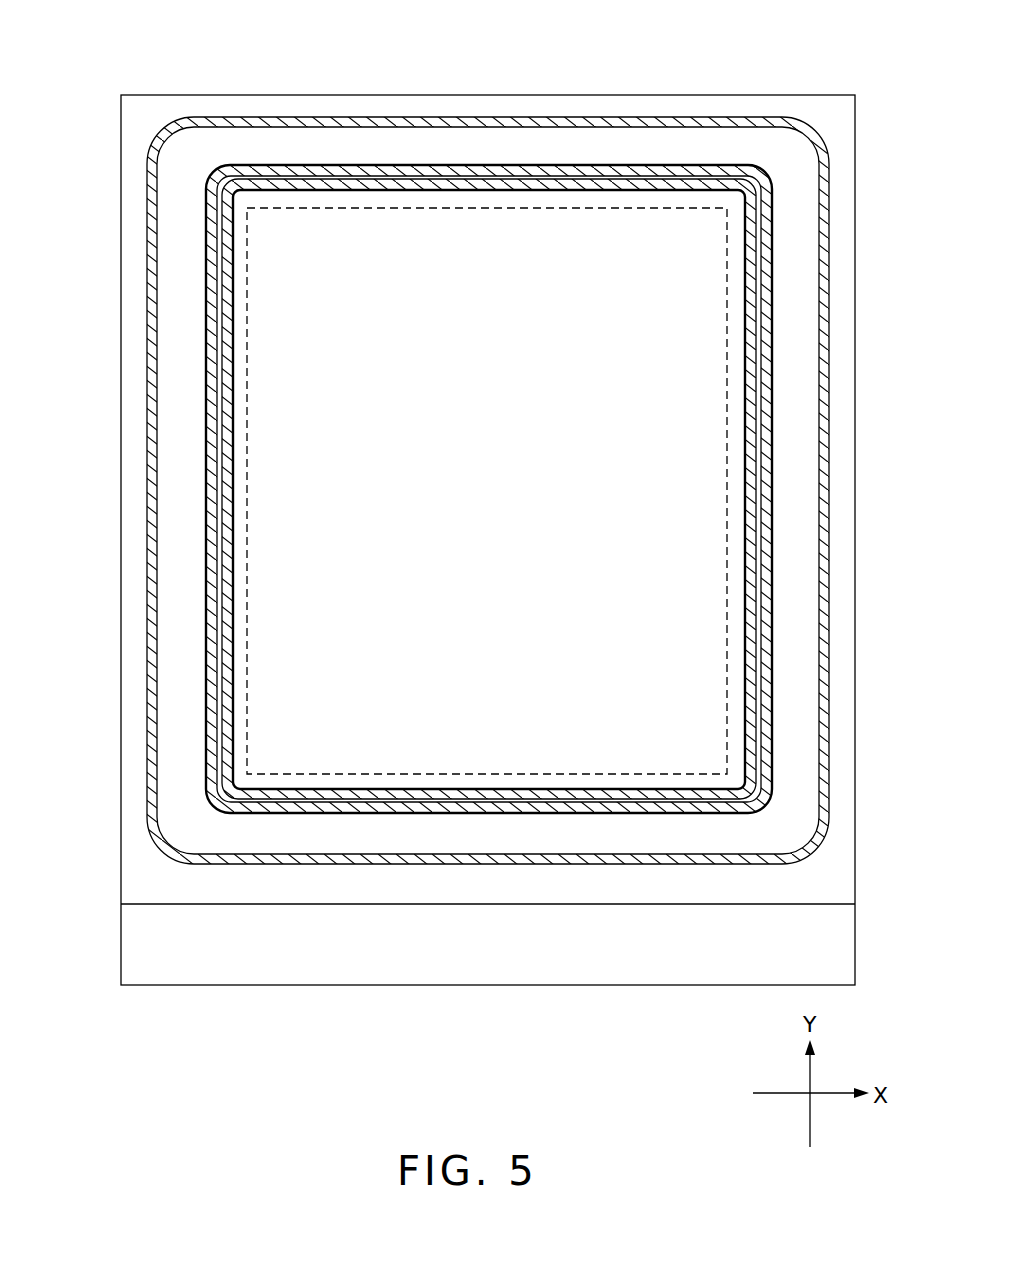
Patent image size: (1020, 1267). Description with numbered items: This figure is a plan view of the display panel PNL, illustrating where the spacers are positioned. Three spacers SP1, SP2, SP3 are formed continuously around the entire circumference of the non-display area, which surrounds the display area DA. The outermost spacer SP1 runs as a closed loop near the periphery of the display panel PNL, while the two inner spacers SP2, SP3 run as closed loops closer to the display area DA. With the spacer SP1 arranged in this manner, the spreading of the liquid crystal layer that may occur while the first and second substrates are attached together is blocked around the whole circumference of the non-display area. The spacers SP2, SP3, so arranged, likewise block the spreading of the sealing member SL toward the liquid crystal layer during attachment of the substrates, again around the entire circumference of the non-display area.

The display panel PNL is at (808, 72).
The sealing member SL is at (120, 467).
The spacer SP1 is at (238, 121).
The spacer SP2 is at (351, 169).
The spacer SP3 is at (456, 182).
The display area DA is at (589, 200).